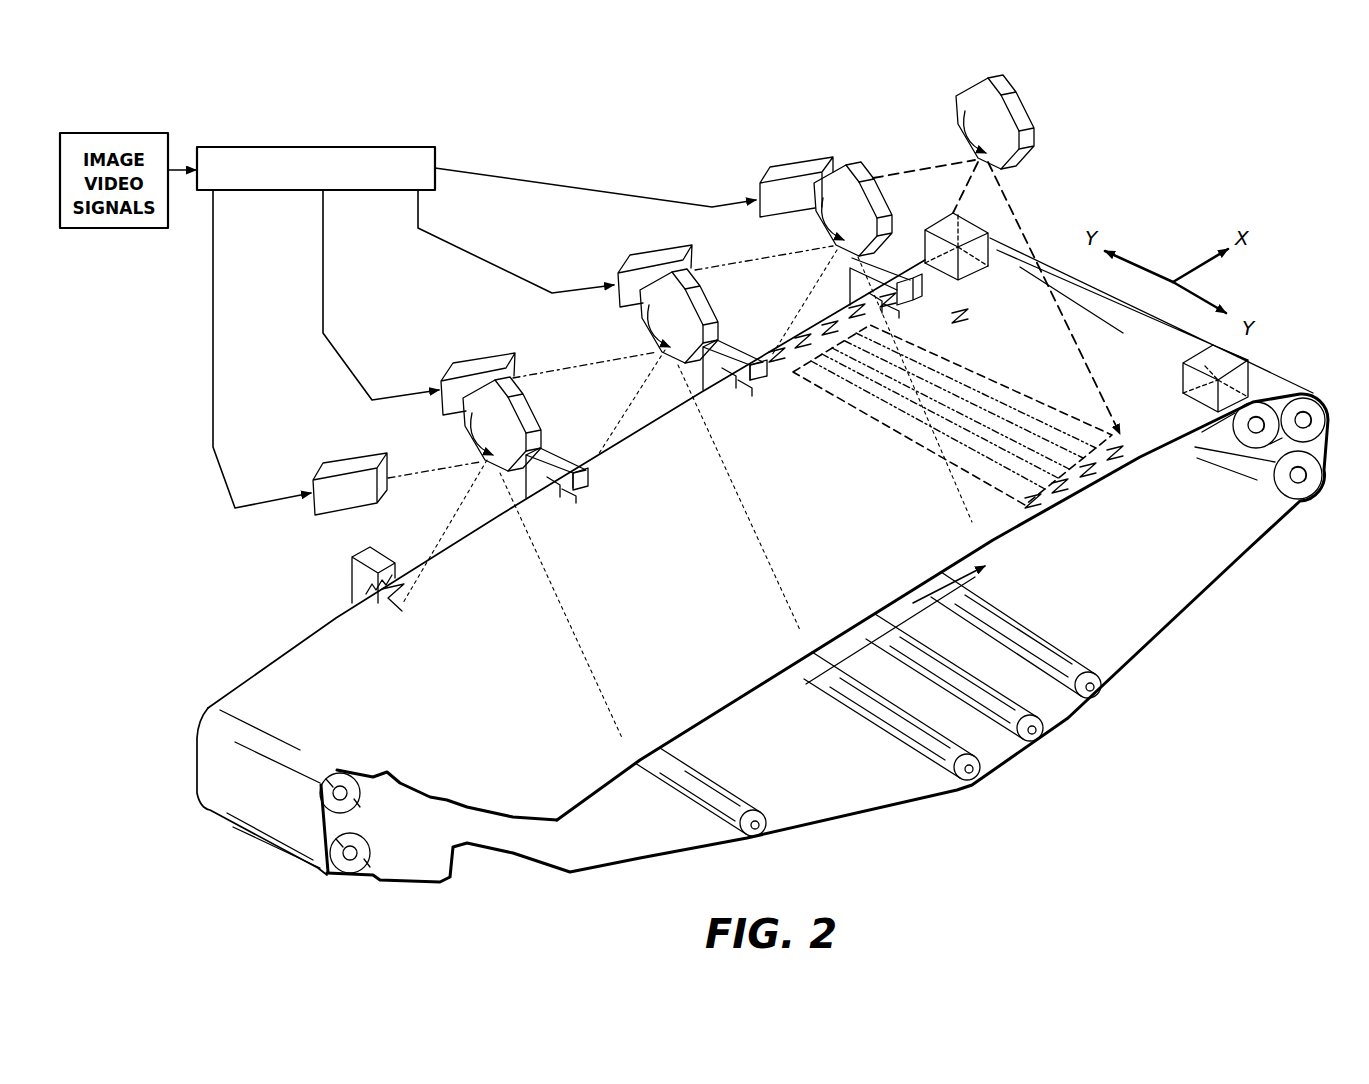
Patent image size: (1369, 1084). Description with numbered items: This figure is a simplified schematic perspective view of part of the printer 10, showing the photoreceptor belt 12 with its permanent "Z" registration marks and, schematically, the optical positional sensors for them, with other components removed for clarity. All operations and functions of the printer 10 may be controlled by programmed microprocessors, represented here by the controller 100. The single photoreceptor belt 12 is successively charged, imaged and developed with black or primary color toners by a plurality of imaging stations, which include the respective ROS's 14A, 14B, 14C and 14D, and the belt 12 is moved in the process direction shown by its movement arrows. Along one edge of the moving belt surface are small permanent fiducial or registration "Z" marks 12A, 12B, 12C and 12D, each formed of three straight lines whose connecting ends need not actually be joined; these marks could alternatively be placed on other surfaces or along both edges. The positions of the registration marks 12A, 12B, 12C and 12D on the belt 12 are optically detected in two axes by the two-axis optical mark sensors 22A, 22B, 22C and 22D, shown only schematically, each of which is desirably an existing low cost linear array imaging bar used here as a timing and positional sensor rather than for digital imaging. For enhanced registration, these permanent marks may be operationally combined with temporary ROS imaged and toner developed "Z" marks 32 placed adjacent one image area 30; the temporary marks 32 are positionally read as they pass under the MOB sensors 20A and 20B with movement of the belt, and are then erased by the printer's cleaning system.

The controller 100 is at (430, 147).
The ROS 14A is at (829, 143).
The ROS 14B is at (687, 230).
The ROS 14C is at (528, 345).
The ROS 14D is at (379, 445).
The "Z" registration mark 12A is at (910, 287).
The "Z" registration mark 12B is at (768, 372).
The "Z" registration mark 12C is at (590, 476).
The "Z" registration mark 12D is at (418, 584).
The two-axis optical mark sensor 22A is at (857, 280).
The two-axis optical mark sensor 22B is at (724, 372).
The two-axis optical mark sensor 22C is at (553, 483).
The two-axis optical mark sensor 22D is at (378, 576).
The MOB sensor 20A is at (1227, 363).
The MOB sensor 20B is at (973, 230).
The image area 30 is at (1005, 463).
The temporary "Z" marks 32 is at (852, 305).
The printer 10 is at (1220, 622).
The photoreceptor belt 12 is at (853, 803).